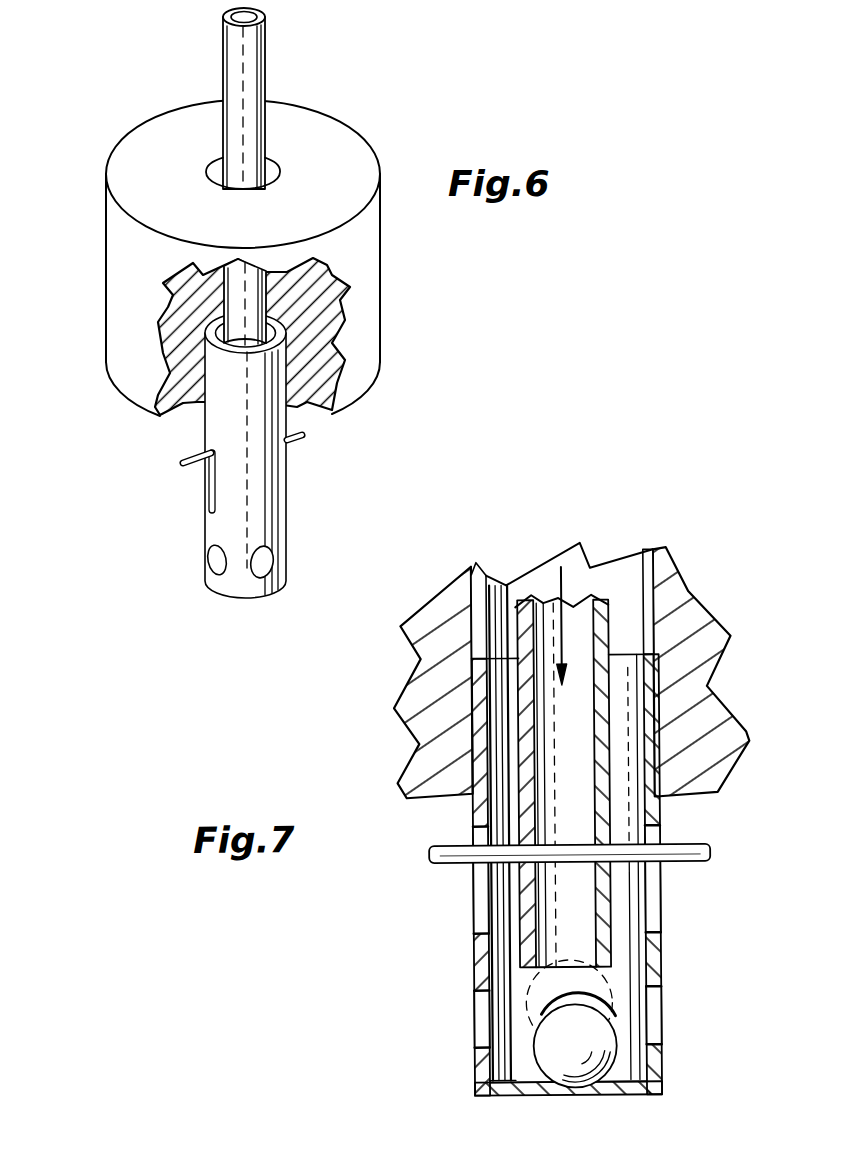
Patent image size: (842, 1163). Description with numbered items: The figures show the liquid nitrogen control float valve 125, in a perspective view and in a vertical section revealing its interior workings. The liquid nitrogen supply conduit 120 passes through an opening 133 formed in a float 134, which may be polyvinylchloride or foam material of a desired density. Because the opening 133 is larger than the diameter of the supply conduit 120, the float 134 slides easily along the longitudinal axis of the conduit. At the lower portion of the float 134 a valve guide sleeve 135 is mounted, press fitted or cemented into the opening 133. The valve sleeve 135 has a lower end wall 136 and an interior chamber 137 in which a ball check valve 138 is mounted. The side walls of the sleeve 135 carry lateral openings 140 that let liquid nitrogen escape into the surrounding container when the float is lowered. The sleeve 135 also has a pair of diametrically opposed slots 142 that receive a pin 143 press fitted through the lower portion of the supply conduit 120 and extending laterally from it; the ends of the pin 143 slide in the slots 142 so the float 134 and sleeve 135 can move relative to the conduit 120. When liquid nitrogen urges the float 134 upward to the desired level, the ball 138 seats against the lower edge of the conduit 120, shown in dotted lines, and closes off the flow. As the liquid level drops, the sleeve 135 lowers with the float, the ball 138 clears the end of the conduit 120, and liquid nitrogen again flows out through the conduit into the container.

In FIG. 6, the liquid nitrogen supply conduit 120 is at (253, 62).
In FIG. 7, the liquid nitrogen supply conduit 120 is at (586, 766).
In FIG. 6, the float valve 125 is at (100, 239).
In FIG. 6, the opening 133 is at (307, 141).
In FIG. 6, the float 134 is at (363, 174).
In FIG. 7, the float 134 is at (422, 718).
In FIG. 6, the valve guide sleeve 135 is at (273, 490).
In FIG. 7, the valve guide sleeve 135 is at (661, 812).
In FIG. 7, the lower end wall 136 is at (613, 1093).
In FIG. 7, the interior chamber 137 is at (631, 982).
In FIG. 7, the ball check valve 138 is at (556, 958).
In FIG. 7, the lateral openings 140 is at (688, 1003).
In FIG. 7, the slots 142 is at (481, 892).
In FIG. 7, the pin 143 is at (712, 852).